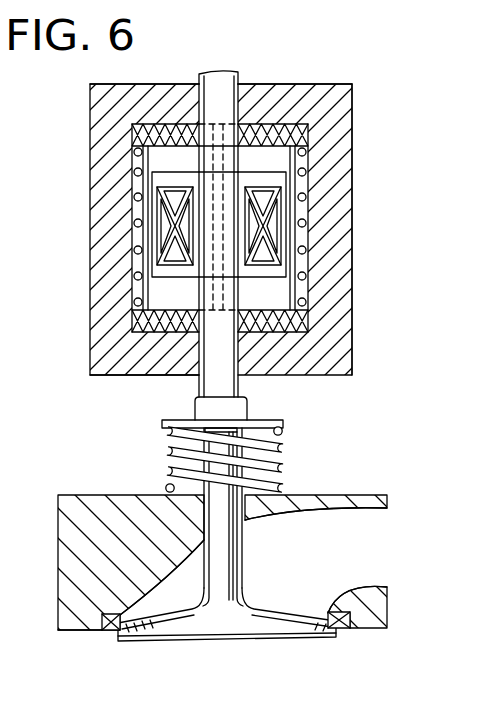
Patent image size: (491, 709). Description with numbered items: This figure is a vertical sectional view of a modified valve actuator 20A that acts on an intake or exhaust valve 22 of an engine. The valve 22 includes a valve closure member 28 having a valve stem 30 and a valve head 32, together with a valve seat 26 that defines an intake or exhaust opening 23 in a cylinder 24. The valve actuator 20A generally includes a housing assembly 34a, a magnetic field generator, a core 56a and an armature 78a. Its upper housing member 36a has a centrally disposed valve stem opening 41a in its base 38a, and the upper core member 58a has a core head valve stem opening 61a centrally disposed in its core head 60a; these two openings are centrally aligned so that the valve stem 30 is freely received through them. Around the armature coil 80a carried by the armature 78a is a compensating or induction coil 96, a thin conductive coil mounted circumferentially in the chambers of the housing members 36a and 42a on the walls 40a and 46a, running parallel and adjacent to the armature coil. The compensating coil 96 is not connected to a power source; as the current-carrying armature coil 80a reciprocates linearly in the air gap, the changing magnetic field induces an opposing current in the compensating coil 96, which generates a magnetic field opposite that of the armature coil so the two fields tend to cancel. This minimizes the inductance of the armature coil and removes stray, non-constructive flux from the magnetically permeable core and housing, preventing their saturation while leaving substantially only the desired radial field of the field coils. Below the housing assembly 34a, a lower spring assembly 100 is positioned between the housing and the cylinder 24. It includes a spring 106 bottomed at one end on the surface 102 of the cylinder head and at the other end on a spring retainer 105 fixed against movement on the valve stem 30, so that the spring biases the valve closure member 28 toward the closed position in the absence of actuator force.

The valve actuator 20A is at (364, 238).
The intake or exhaust valve 22 is at (328, 652).
The intake or exhaust opening 23 is at (345, 577).
The cylinder 24 is at (58, 633).
The valve seat 26 is at (113, 633).
The valve closure member 28 is at (248, 537).
The valve stem 30 is at (245, 577).
The valve head 32 is at (243, 641).
The housing assembly 34a is at (88, 224).
The upper housing member 36a is at (90, 86).
The base 38a is at (288, 95).
The wall 40a is at (320, 135).
The valve stem opening 41a is at (242, 87).
The housing member 42a is at (89, 380).
The wall 46a is at (332, 322).
The core 56a is at (150, 306).
The upper core member 58a is at (322, 133).
The core head 60a is at (175, 125).
The core head valve stem opening 61a is at (202, 130).
The armature 78a is at (167, 169).
The armature coil 80a is at (156, 292).
The compensating coil 96 is at (136, 249).
The lower spring assembly 100 is at (157, 445).
The surface of the cylinder head 102 is at (331, 492).
The spring retainer 105 is at (287, 422).
The spring 106 is at (284, 449).